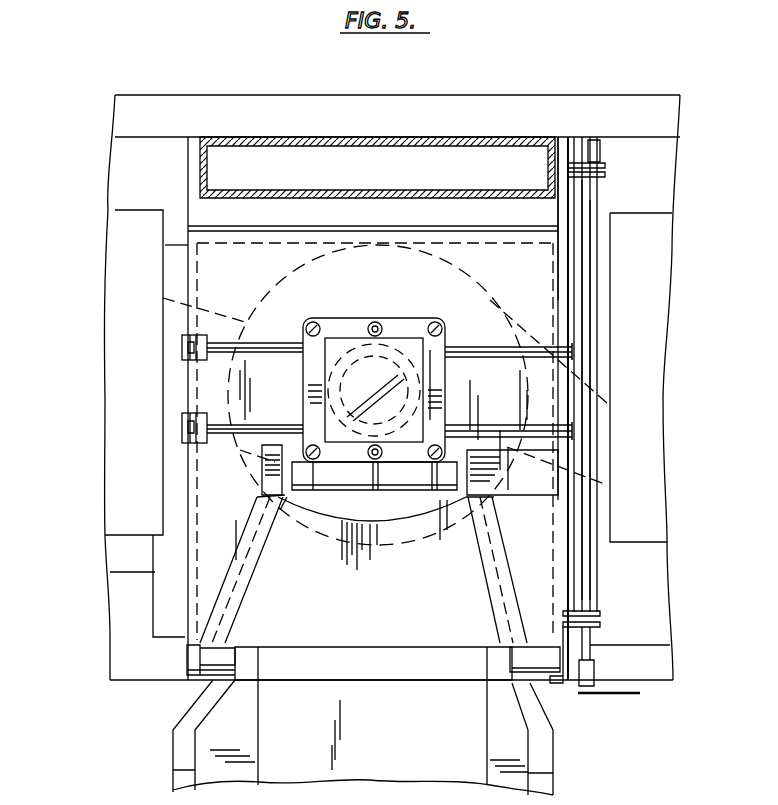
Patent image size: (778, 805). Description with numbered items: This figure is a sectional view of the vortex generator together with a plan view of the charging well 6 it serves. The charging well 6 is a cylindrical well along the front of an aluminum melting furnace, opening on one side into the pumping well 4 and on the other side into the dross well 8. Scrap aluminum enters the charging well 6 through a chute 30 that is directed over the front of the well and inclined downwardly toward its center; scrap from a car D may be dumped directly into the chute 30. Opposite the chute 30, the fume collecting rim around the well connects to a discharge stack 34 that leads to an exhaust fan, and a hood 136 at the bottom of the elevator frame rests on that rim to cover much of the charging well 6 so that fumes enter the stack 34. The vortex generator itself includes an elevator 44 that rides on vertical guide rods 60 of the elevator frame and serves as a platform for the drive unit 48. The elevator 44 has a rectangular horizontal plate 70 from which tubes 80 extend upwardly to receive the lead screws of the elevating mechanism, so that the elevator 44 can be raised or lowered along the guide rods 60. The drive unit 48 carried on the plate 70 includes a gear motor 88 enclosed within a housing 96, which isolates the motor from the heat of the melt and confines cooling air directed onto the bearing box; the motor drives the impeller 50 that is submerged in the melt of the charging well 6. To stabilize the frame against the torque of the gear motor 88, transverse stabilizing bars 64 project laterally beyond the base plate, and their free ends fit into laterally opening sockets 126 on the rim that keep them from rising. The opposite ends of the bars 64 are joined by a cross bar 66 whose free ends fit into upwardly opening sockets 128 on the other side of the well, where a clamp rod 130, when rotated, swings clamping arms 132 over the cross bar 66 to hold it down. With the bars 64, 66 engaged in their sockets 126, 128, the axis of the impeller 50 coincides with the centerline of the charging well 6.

The pumping well 4 is at (113, 410).
The dross well 8 is at (650, 405).
The chute 30 is at (337, 622).
The discharge stack 34 is at (375, 157).
The elevator 44 is at (418, 314).
The drive unit 48 is at (335, 462).
The impeller 50 is at (412, 462).
The charging well 6 is at (300, 512).
The guide rods 60 is at (313, 322).
The stabilizing bars 64 is at (265, 445).
The cross bar 66 is at (578, 332).
The horizontal plate 70 is at (440, 372).
The tubes 80 is at (375, 322).
The gear motor 88 is at (390, 462).
The housing 96 is at (330, 372).
The laterally opening sockets 126 is at (185, 415).
The upwardly opening sockets 128 is at (590, 187).
The clamp rod 130 is at (590, 463).
The clamping arms 132 is at (578, 163).
The hood 136 is at (540, 285).
The car D is at (160, 752).